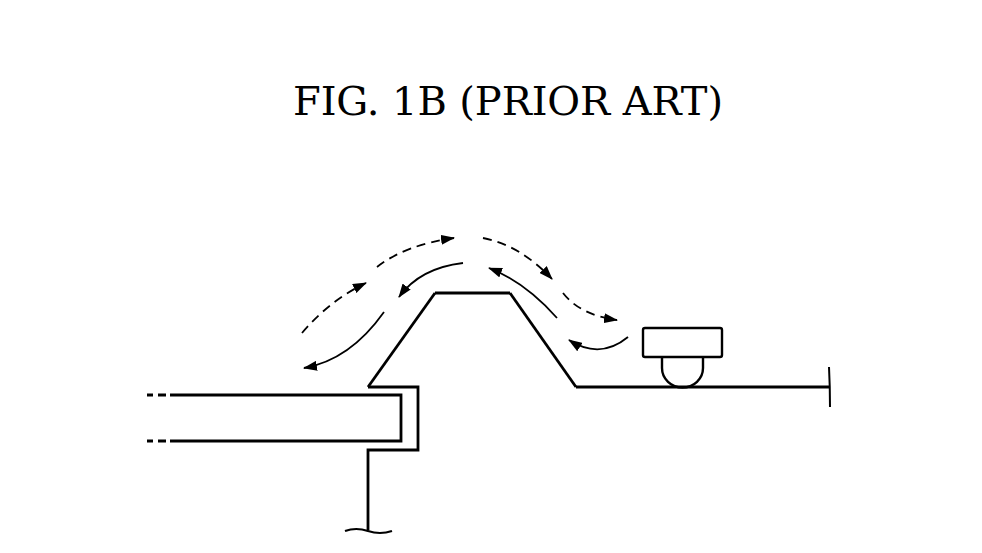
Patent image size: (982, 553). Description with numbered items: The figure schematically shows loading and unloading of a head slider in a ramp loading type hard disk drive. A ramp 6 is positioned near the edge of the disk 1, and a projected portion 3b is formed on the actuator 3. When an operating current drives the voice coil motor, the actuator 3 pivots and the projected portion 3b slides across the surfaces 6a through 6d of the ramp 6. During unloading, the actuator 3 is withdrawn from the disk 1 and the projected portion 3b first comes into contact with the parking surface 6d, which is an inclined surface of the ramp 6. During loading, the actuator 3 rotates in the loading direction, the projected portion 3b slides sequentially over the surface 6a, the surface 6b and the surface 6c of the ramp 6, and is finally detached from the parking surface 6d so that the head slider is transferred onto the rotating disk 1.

The disk 1 is at (208, 395).
The actuator 3 is at (670, 327).
The projected portion 3b is at (684, 378).
The ramp 6 is at (562, 353).
The surface of the ramp 6a is at (758, 386).
The surface of the ramp 6b is at (547, 340).
The surface of the ramp 6c is at (475, 292).
The parking surface 6d is at (402, 340).